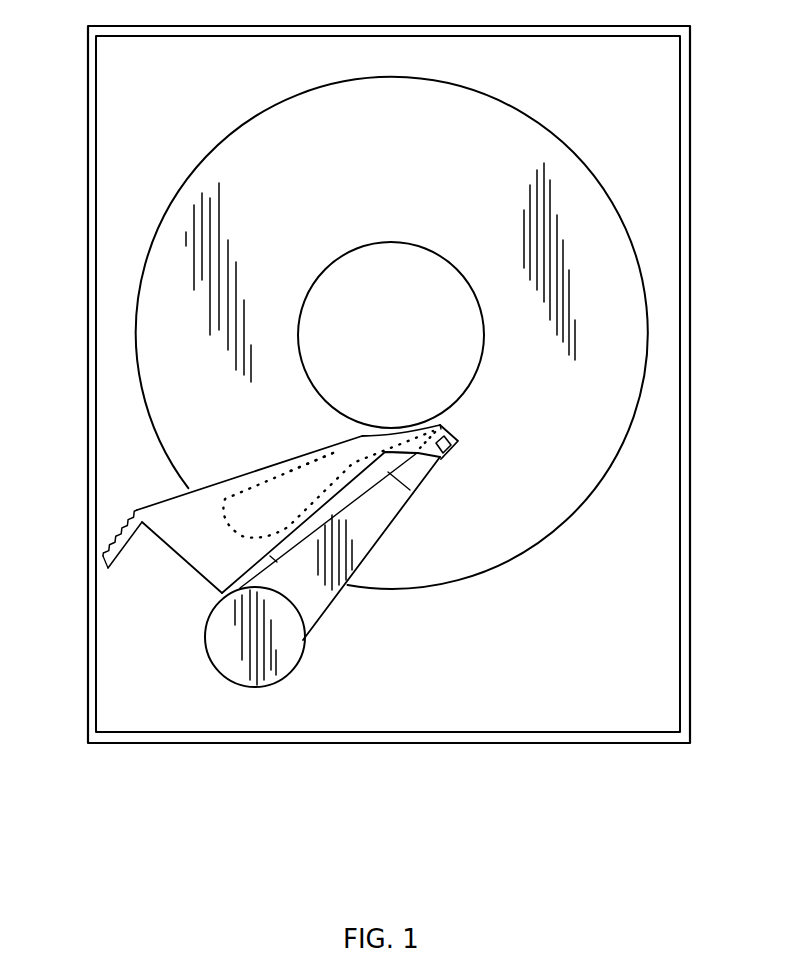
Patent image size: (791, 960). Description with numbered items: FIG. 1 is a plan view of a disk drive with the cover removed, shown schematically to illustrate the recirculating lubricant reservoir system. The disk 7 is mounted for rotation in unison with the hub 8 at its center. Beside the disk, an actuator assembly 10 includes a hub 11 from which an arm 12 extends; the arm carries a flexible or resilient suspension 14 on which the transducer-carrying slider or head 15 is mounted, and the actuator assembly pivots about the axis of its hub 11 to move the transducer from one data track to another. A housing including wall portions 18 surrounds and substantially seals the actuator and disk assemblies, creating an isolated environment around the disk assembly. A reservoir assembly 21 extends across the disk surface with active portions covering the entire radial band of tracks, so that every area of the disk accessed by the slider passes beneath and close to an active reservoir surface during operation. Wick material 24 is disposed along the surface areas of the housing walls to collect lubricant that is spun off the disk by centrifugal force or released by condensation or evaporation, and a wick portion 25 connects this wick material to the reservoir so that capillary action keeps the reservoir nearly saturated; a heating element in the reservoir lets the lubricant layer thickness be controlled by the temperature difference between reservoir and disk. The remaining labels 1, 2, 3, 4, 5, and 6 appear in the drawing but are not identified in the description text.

The disk cartridge 1 is at (429, 333).
The clamp 2 is at (453, 448).
The cleaning arm 3 is at (247, 476).
The jacket 4 is at (90, 599).
The pad 5 is at (237, 493).
The pivot point 6 is at (442, 426).
The disk 7 is at (573, 138).
The hub 8 is at (455, 266).
The actuator assembly 10 is at (321, 620).
The hub 11 is at (285, 680).
The arm 12 is at (345, 585).
The suspension 14 is at (421, 470).
The slider 15 is at (464, 464).
The wall portions 18 is at (691, 642).
The reservoir assembly 21 is at (287, 457).
The wick material 24 is at (166, 731).
The wick portion 25 is at (124, 541).